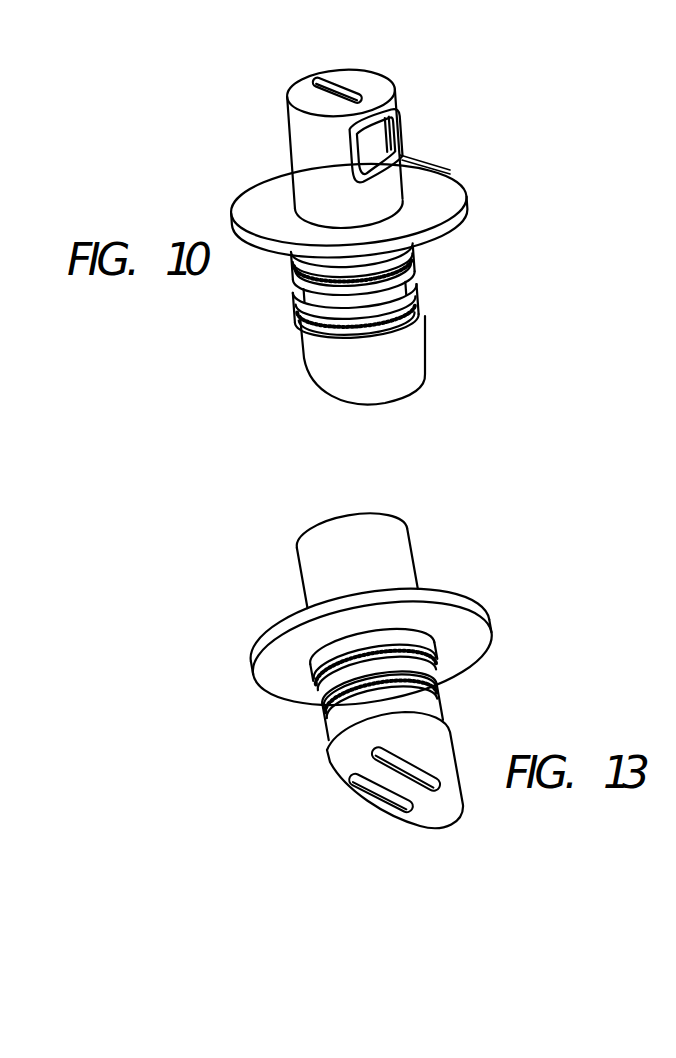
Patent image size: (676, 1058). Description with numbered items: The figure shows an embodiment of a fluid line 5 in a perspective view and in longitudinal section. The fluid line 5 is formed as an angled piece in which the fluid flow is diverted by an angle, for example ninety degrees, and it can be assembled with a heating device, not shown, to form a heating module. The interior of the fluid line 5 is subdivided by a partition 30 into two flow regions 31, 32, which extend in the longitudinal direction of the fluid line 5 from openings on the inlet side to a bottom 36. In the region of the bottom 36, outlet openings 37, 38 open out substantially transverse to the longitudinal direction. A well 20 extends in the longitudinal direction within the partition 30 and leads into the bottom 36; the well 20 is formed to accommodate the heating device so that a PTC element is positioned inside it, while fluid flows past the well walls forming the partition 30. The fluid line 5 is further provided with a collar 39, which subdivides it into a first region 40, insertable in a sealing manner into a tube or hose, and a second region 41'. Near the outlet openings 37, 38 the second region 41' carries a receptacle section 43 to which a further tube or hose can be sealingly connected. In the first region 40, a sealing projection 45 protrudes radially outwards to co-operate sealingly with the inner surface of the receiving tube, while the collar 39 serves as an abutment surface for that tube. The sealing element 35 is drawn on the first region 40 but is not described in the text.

In FIG. 10, the fluid line 5 is at (498, 289).
In FIG. 13, the fluid line 5 is at (288, 463).
In FIG. 10, the well 20 is at (320, 73).
In FIG. 13, the partition 30 is at (401, 789).
In FIG. 13, the flow region 31 is at (370, 793).
In FIG. 13, the flow region 32 is at (437, 797).
In FIG. 10, the O-ring 35 is at (298, 285).
In FIG. 10, the bottom 36 is at (372, 77).
In FIG. 13, the bottom 36 is at (371, 505).
In FIG. 10, the outlet opening 37 is at (347, 156).
In FIG. 10, the outlet opening 38 is at (399, 126).
In FIG. 10, the collar 39 is at (468, 215).
In FIG. 13, the collar 39 is at (480, 617).
In FIG. 13, the first region 40 is at (302, 827).
In FIG. 13, the second region 41' is at (211, 587).
In FIG. 10, the receptacle section 43 is at (452, 172).
In FIG. 13, the sealing projection 45 is at (443, 693).